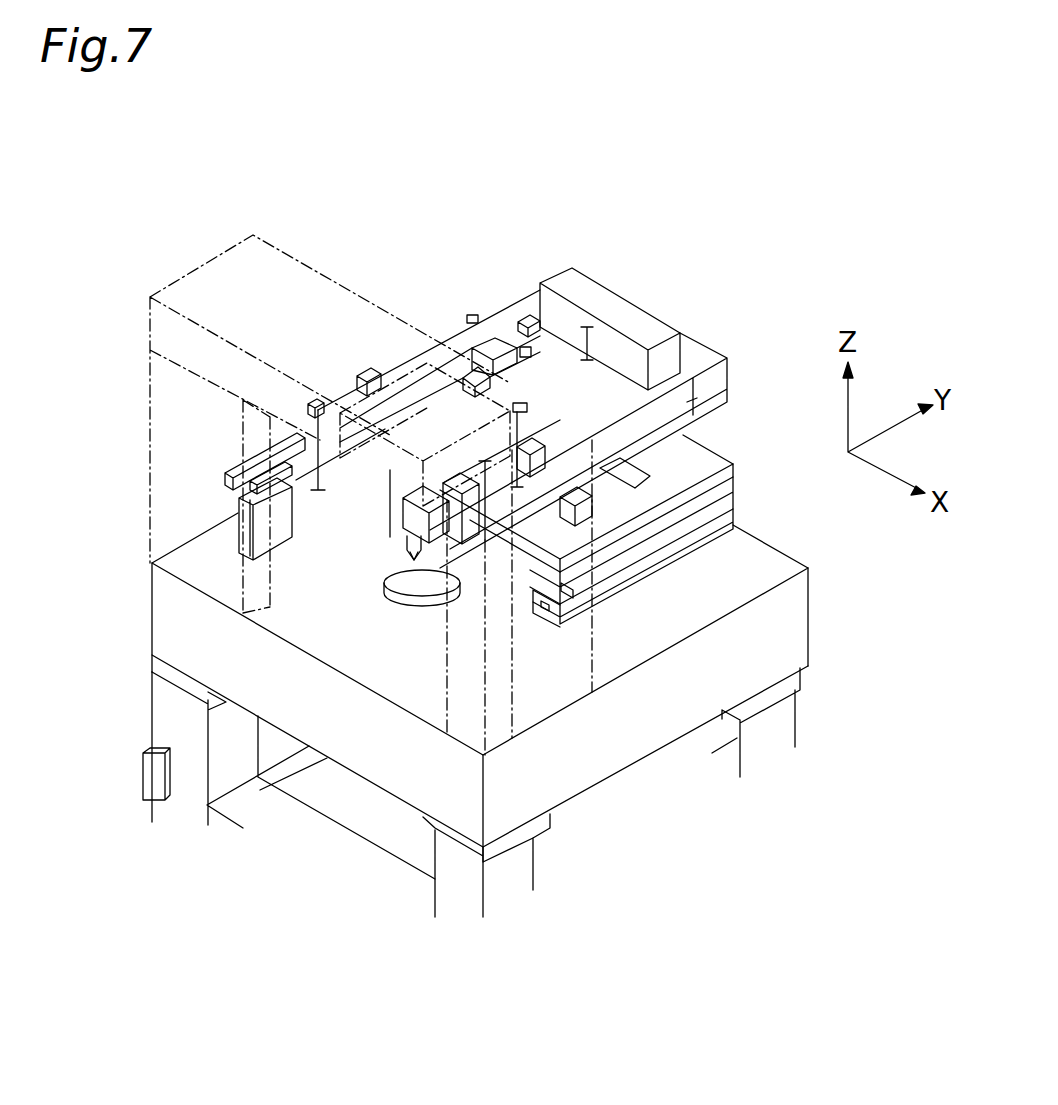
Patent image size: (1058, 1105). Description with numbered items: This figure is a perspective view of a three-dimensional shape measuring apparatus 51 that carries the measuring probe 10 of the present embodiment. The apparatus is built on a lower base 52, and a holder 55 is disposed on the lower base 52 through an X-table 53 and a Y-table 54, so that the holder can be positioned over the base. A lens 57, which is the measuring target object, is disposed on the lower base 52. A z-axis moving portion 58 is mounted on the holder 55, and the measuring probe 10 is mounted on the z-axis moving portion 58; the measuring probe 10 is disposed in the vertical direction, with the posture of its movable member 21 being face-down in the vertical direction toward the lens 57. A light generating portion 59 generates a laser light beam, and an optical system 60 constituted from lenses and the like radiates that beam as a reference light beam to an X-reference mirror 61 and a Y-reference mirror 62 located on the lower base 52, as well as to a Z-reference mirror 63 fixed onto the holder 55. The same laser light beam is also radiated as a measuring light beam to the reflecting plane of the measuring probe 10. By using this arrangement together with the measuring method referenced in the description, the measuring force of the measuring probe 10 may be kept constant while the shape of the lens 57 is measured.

The three-dimensional shape measuring apparatus 51 is at (703, 297).
The lower base 52 is at (600, 743).
The X-table 53 is at (680, 522).
The Y-table 54 is at (620, 573).
The holder 55 is at (690, 403).
The lens 57 is at (418, 608).
The z-axis moving portion 58 is at (390, 497).
The light generating portion 59 is at (597, 300).
The optical system 60 is at (513, 390).
The X-reference mirror 61 is at (225, 484).
The Y-reference mirror 62 is at (683, 430).
The Z-reference mirror 63 is at (383, 355).
The measuring probe 10 is at (390, 513).
The movable member 21 is at (407, 553).